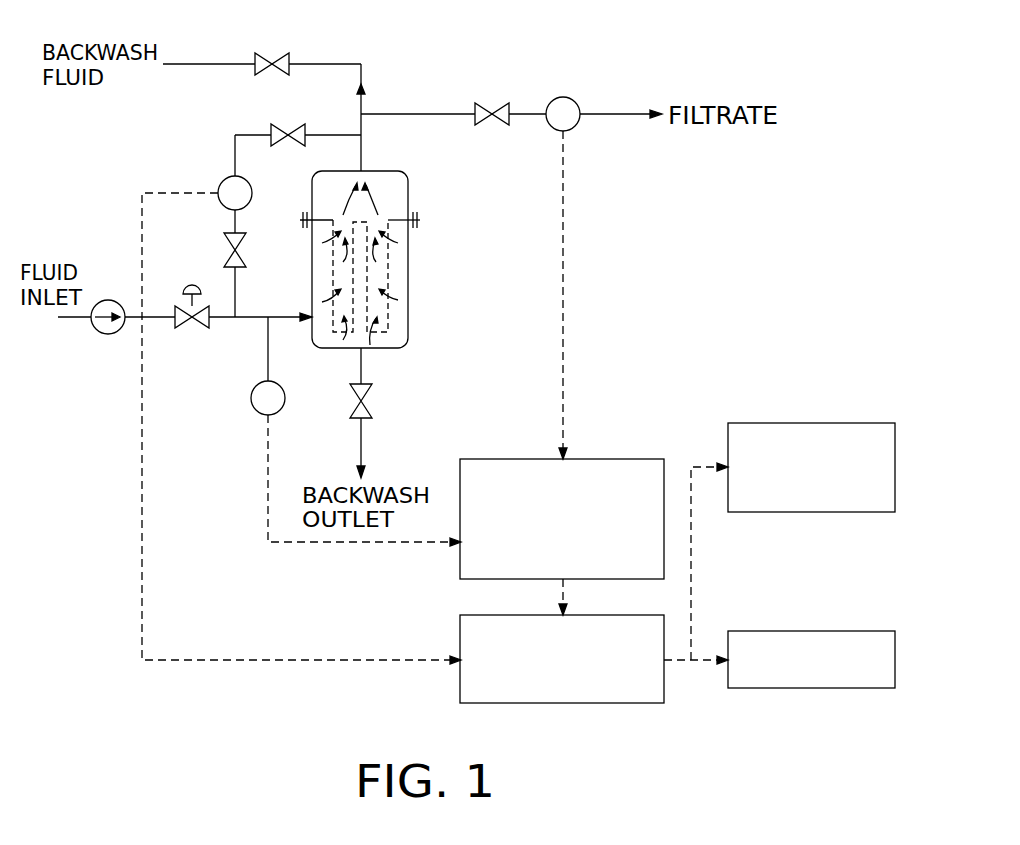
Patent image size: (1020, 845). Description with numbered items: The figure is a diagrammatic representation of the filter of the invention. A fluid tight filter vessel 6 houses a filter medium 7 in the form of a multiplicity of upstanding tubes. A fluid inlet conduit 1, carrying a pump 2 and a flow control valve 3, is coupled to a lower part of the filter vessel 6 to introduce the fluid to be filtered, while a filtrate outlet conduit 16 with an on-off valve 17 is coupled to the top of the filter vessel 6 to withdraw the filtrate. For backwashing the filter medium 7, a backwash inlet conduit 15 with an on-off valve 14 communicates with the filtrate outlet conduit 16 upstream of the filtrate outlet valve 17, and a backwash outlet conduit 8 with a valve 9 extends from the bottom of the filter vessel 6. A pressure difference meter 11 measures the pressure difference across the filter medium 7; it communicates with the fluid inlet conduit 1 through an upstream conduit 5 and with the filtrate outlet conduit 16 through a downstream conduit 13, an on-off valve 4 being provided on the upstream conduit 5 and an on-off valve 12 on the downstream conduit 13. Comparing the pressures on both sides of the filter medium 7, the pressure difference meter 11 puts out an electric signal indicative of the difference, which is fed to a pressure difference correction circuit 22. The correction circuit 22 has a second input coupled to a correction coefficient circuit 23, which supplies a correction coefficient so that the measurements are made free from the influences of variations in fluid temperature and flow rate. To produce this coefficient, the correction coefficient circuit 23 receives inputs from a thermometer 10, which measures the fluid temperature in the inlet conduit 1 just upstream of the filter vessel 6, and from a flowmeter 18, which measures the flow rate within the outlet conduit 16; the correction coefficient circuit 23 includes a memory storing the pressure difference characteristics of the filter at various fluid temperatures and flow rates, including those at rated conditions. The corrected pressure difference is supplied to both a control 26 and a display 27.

The fluid inlet conduit 1 is at (80, 318).
The pump 2 is at (108, 300).
The flow control valve 3 is at (192, 286).
The on-off valve 4 is at (246, 250).
The upstream conduit 5 is at (235, 292).
The filter vessel 6 is at (409, 256).
The filter medium 7 is at (384, 308).
The backwash outlet conduit 8 is at (362, 365).
The valve 9 is at (372, 401).
The thermometer 10 is at (283, 388).
The pressure difference meter 11 is at (222, 180).
The on-off valve 12 is at (290, 124).
The downstream conduit 13 is at (337, 135).
The on-off valve 14 is at (274, 53).
The backwash inlet conduit 15 is at (331, 64).
The filtrate outlet conduit 16 is at (410, 114).
The on-off valve 17 is at (494, 103).
The flowmeter 18 is at (564, 97).
The pressure difference correction circuit 22 is at (650, 703).
The correction coefficient circuit 23 is at (613, 459).
The control 26 is at (795, 631).
The display 27 is at (795, 423).